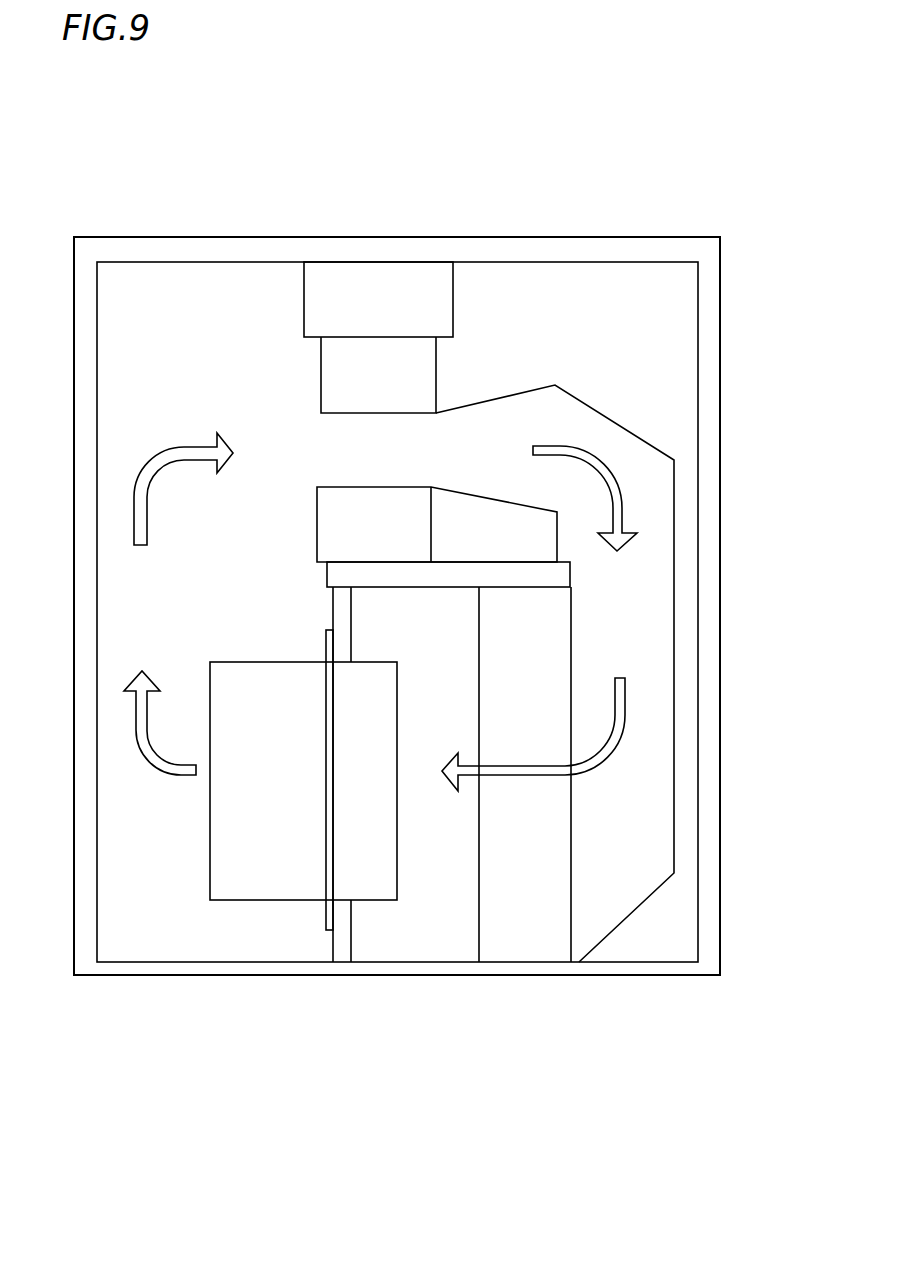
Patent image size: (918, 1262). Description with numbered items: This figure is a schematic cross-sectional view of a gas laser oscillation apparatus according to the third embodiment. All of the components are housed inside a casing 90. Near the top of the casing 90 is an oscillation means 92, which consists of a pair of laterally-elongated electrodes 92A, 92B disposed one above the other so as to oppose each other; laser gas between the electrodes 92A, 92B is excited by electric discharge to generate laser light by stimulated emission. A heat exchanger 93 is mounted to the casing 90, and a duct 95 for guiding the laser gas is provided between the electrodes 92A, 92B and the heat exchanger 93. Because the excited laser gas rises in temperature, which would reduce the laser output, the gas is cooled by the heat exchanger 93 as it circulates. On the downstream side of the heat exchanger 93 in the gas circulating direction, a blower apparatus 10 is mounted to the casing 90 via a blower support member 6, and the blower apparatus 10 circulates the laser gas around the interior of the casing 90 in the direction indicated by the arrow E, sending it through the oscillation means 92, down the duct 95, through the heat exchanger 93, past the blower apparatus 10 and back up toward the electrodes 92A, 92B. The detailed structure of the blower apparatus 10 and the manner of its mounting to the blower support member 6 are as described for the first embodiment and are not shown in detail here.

The casing 90 is at (163, 969).
The oscillation means 92 is at (323, 320).
The electrode 92A is at (320, 373).
The electrode 92B is at (317, 513).
The heat exchanger 93 is at (562, 904).
The duct 95 is at (676, 817).
The blower apparatus 10 is at (253, 900).
The blower support member 6 is at (343, 933).
The arrow E is at (143, 752).